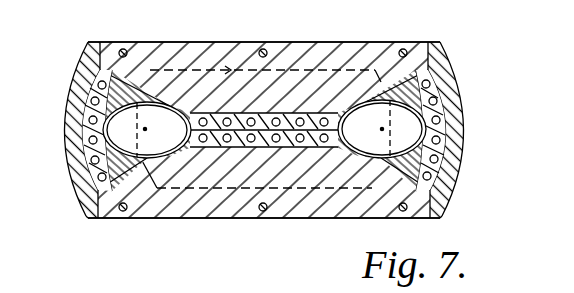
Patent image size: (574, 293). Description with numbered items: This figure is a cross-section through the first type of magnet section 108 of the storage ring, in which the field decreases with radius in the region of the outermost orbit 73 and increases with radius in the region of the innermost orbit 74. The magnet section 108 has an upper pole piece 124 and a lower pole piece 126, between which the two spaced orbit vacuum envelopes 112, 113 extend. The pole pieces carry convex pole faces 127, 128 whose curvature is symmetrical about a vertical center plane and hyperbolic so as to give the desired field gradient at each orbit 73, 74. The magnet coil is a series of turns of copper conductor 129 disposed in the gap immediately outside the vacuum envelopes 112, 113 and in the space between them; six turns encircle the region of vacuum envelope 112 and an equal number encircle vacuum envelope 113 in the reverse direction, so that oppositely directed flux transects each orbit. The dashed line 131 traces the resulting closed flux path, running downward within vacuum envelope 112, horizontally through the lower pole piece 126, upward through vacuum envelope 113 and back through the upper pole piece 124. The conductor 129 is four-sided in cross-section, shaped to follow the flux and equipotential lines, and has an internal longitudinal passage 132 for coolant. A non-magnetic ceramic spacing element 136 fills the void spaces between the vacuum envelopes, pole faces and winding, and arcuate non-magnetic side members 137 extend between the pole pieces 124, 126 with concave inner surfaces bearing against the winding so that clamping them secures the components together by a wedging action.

The magnet section 108 is at (442, 26).
The upper pole piece 124 is at (295, 42).
The lower pole piece 126 is at (229, 219).
The spacing element 136 is at (128, 86).
The vacuum envelope 112 is at (171, 104).
The vacuum envelope 113 is at (338, 152).
The pole face 127 is at (275, 114).
The pole face 128 is at (262, 150).
The copper conductor 129 is at (441, 109).
The internal longitudinal passage 132 is at (440, 140).
The dashed line 131 is at (328, 189).
The side member 137 is at (71, 185).
The outermost orbit 73 is at (147, 129).
The innermost orbit 74 is at (380, 129).